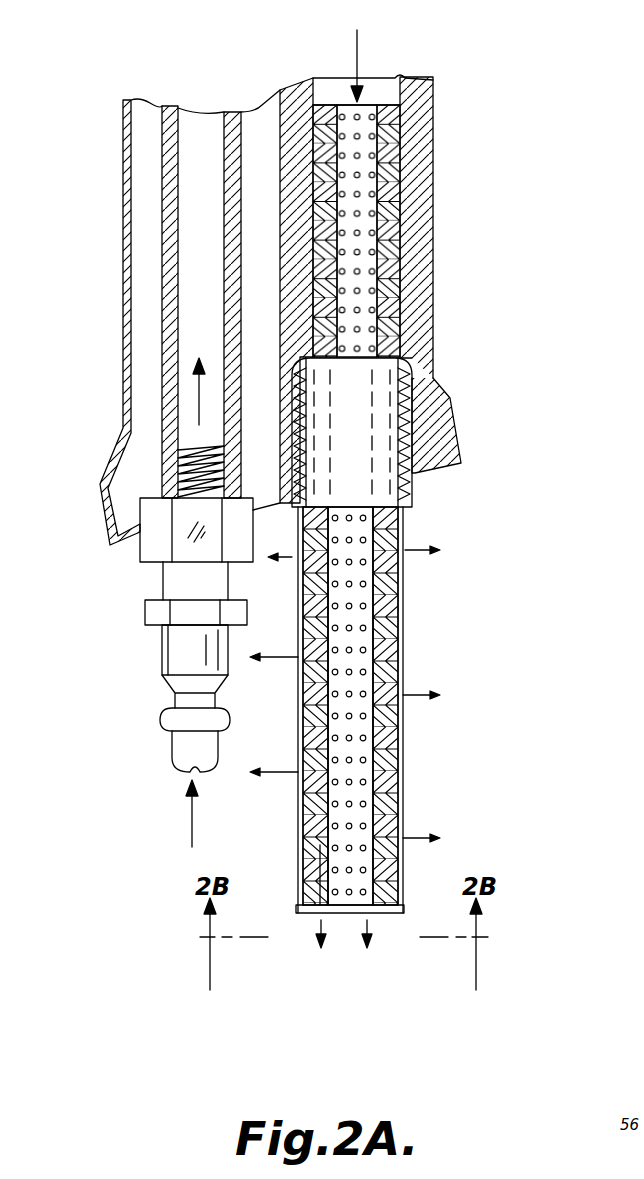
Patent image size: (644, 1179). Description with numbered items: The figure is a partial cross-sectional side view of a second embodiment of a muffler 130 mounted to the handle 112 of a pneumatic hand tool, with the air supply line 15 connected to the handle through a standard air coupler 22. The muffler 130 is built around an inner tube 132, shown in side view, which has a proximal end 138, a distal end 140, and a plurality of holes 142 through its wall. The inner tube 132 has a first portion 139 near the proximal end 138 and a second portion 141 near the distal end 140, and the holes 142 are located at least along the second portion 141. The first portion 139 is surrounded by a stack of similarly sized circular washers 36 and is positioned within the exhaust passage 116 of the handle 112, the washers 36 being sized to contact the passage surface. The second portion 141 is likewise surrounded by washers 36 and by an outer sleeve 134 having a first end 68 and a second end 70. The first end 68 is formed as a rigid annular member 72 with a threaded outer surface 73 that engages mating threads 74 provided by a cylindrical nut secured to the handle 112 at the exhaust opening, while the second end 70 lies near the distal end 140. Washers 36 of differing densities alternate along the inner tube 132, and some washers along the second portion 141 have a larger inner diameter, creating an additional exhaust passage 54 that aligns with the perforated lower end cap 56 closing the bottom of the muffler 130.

The handle 112 is at (123, 155).
The exhaust passage 116 is at (390, 90).
The inner tube proximal end 138 is at (363, 143).
The first portion 139 is at (355, 213).
The washers 36 is at (410, 297).
The outer sleeve first end 68 is at (405, 395).
The annular member 72 is at (303, 446).
The threaded outer surface 73 is at (307, 483).
The mating threads 74 is at (405, 458).
The air coupler 22 is at (165, 635).
The air supply line 15 is at (172, 750).
The muffler 130 is at (514, 666).
The outer sleeve 134 is at (398, 627).
The second portion 141 is at (352, 705).
The holes 142 is at (372, 770).
The inner tube 132 is at (390, 823).
The outer sleeve second end 70 is at (395, 875).
The passage 54 is at (327, 853).
The lower end cap 56 is at (387, 913).
The inner tube distal end 140 is at (352, 905).